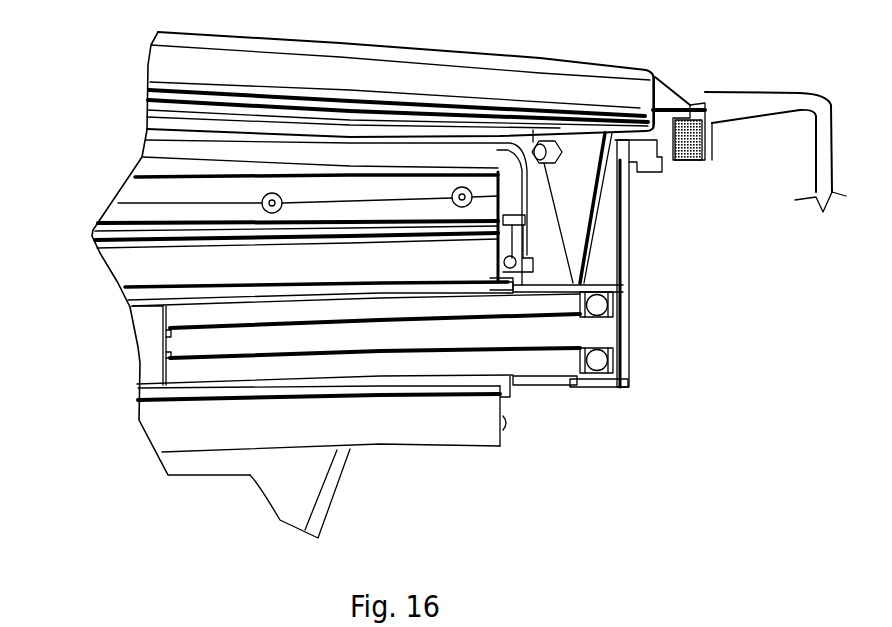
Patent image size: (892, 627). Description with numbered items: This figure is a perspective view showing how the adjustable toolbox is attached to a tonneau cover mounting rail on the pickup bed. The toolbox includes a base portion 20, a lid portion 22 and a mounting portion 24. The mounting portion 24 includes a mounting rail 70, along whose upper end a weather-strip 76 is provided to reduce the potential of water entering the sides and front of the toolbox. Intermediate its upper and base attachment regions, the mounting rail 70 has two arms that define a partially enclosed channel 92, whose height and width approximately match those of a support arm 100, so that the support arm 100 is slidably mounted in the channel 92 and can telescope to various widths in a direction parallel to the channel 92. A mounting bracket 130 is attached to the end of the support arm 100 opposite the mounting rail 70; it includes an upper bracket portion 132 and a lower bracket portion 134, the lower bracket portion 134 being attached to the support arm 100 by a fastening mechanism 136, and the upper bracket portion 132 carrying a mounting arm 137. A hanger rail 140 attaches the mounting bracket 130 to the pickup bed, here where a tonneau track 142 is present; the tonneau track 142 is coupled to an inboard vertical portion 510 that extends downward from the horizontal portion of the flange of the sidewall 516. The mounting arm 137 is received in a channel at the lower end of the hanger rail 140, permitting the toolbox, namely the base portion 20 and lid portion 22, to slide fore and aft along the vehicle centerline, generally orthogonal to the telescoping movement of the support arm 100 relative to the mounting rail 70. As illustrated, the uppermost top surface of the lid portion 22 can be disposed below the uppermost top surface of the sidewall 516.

The base portion 20 is at (268, 484).
The lid portion 22 is at (155, 177).
The mounting portion 24 is at (145, 328).
The mounting rail 70 is at (152, 368).
The weather-strip 76 is at (522, 228).
The channel 92 is at (138, 300).
The support arm 100 is at (537, 381).
The mounting bracket 130 is at (618, 252).
The upper bracket portion 132 is at (630, 182).
The lower bracket portion 134 is at (608, 392).
The fastening mechanism 136 is at (600, 357).
The mounting arm 137 is at (610, 158).
The hanger rail 140 is at (677, 167).
The tonneau track 142 is at (678, 84).
The inboard vertical portion 510 is at (708, 145).
The sidewall 516 is at (760, 97).